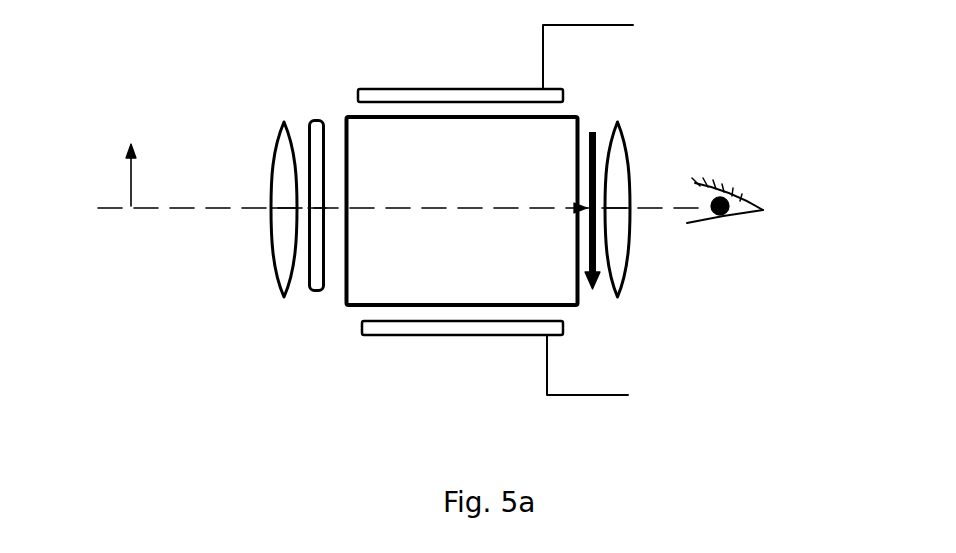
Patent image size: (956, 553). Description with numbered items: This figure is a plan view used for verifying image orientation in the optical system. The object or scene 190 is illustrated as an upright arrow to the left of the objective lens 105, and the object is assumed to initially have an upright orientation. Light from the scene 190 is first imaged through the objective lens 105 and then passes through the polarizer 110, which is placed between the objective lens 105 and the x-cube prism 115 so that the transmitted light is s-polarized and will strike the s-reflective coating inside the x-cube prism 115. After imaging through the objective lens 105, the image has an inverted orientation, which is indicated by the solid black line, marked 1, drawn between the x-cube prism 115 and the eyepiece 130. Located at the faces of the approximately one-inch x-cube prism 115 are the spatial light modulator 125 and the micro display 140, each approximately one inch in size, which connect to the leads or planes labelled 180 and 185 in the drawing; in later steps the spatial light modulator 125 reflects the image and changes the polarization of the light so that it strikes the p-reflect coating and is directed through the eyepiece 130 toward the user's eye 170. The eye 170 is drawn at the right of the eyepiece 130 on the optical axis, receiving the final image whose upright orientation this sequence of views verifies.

The objective lens 105 is at (278, 118).
The polarizer 110 is at (317, 295).
The x-cube prism 115 is at (350, 308).
The spatial light modulator 125 is at (447, 337).
The eyepiece 130 is at (615, 297).
The micro display/LCD 140 is at (382, 88).
The eye 170 is at (728, 178).
The intermediary image plane 180 is at (621, 46).
The lower electrical lead 185 is at (606, 384).
The Scene 190 is at (133, 193).
The light direction arrow 1 is at (593, 126).